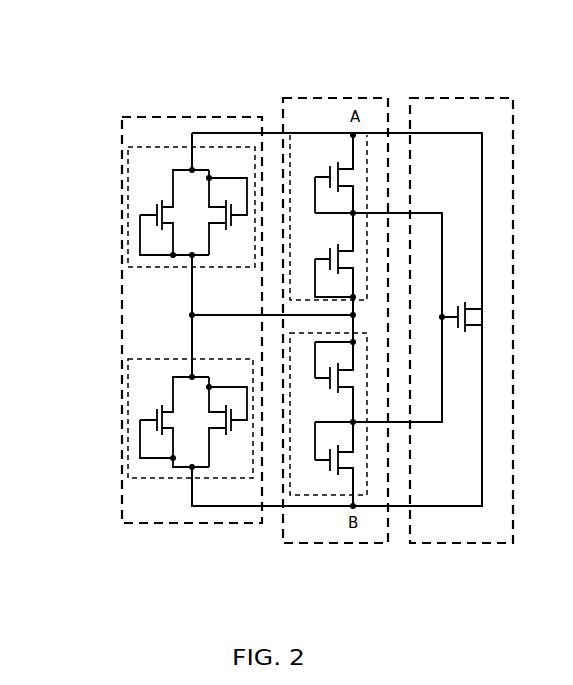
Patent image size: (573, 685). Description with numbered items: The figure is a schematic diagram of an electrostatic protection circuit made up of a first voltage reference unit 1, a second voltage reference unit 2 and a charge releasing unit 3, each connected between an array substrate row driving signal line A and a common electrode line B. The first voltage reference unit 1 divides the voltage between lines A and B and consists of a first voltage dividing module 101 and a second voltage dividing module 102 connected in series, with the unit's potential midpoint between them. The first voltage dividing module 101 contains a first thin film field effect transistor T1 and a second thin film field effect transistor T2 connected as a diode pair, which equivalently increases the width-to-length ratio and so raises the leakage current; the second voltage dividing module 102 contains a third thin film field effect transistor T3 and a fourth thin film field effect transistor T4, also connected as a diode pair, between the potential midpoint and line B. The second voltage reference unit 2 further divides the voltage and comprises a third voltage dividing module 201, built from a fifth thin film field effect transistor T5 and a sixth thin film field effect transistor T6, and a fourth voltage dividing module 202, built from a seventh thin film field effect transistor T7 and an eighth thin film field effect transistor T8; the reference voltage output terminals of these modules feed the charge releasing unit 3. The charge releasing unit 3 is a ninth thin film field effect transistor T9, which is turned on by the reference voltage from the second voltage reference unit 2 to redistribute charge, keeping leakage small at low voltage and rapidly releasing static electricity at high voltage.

The first voltage reference unit 1 is at (119, 112).
The first voltage dividing module 101 is at (140, 186).
The second voltage dividing module 102 is at (139, 397).
The second voltage reference unit 2 is at (282, 92).
The third voltage dividing module 201 is at (311, 159).
The fourth voltage dividing module 202 is at (299, 464).
The charge releasing unit 3 is at (407, 92).
The first thin film field effect transistor T1 is at (154, 211).
The second thin film field effect transistor T2 is at (153, 422).
The third thin film field effect transistor T3 is at (228, 214).
The fourth thin film field effect transistor T4 is at (228, 425).
The fifth thin film field effect transistor T5 is at (322, 173).
The sixth thin film field effect transistor T6 is at (322, 255).
The seventh thin film field effect transistor T7 is at (323, 382).
The eighth thin film field effect transistor T8 is at (322, 464).
The ninth thin film field effect transistor T9 is at (462, 335).